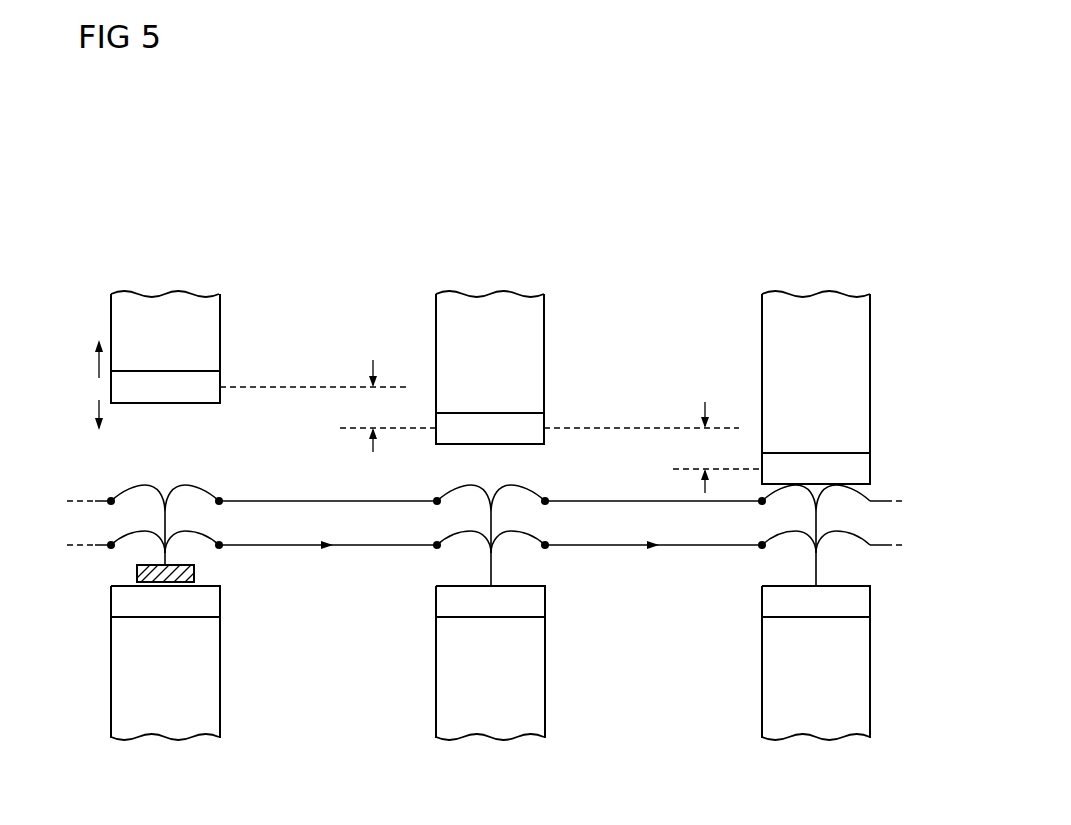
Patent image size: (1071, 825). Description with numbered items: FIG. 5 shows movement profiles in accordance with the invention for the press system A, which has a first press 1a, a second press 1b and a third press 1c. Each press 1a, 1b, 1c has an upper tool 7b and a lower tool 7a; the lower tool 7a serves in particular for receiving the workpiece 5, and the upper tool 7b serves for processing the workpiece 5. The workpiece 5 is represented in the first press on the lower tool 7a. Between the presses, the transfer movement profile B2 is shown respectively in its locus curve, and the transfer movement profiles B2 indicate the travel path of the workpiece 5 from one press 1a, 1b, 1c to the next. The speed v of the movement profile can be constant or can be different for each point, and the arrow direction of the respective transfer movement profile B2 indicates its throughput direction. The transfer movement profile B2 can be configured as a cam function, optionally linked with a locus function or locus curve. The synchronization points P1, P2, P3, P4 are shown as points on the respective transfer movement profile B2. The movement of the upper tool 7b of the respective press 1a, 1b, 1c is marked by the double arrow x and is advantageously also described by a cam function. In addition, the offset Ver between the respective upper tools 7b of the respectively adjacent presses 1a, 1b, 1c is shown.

The system A is at (436, 150).
The first press 1a is at (168, 276).
The second press 1b is at (490, 276).
The third press 1c is at (820, 276).
The lower tool 7a is at (141, 612).
The upper tool 7b is at (164, 381).
The workpiece 5 is at (189, 584).
The transfer movement profile B2 is at (91, 492).
The synchronization point P1 is at (383, 489).
The synchronization point P2 is at (383, 559).
The synchronization point P3 is at (436, 502).
The synchronization point P4 is at (436, 558).
The double arrow x is at (98, 385).
The offset Ver is at (538, 426).
The speed v is at (490, 555).